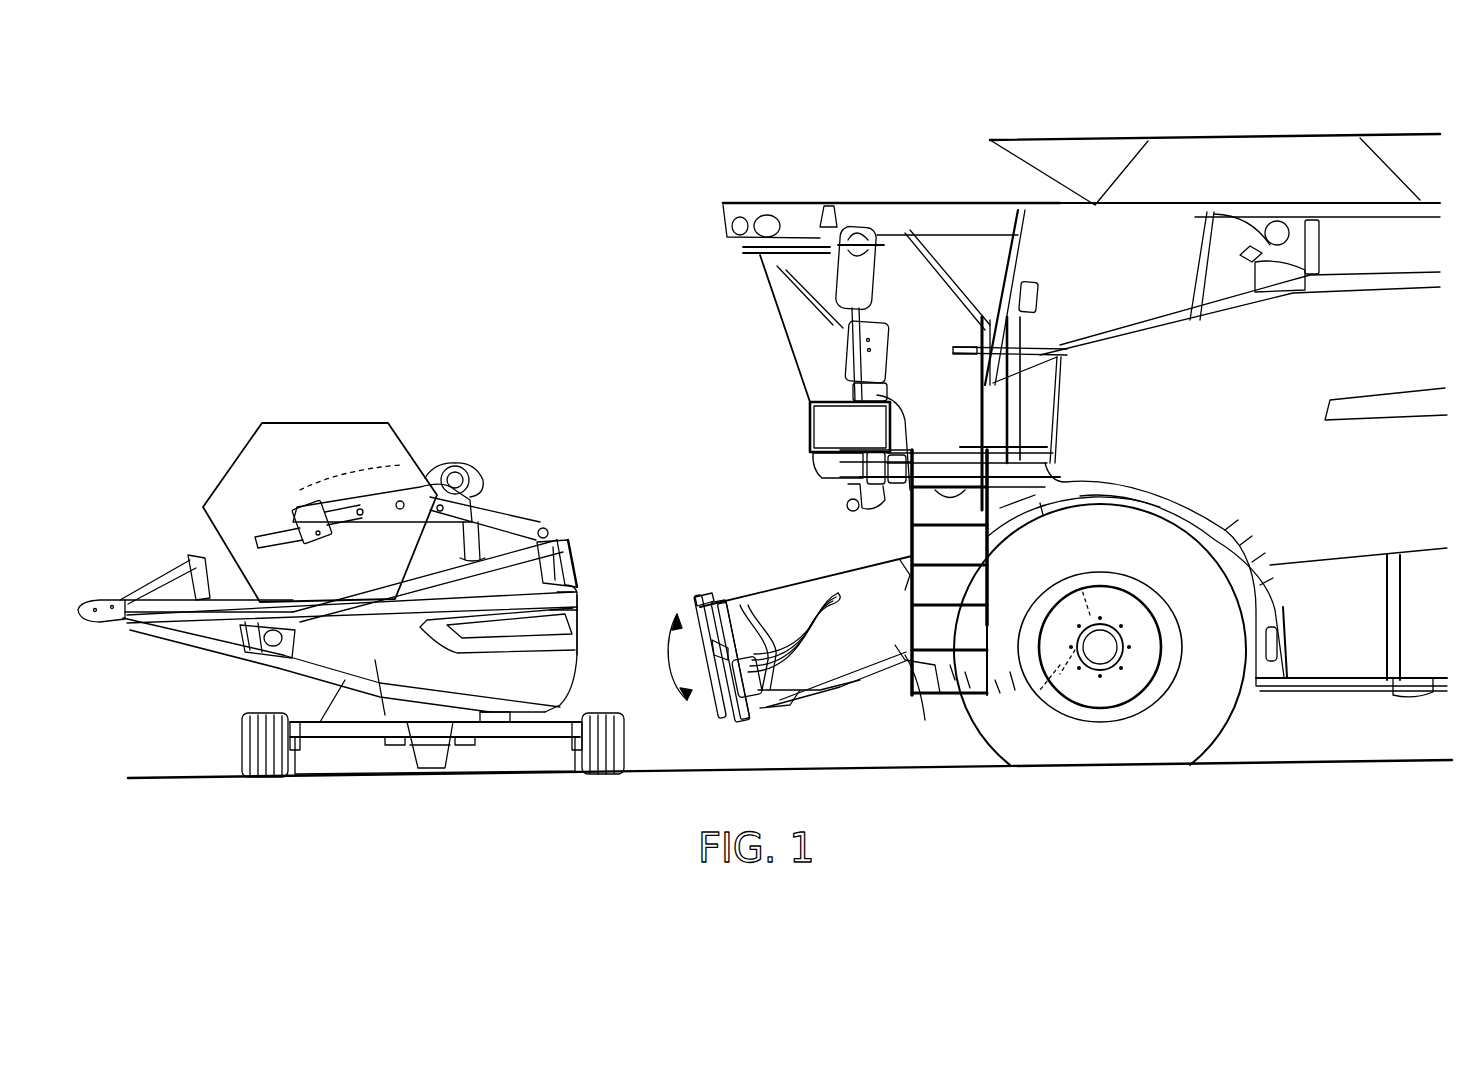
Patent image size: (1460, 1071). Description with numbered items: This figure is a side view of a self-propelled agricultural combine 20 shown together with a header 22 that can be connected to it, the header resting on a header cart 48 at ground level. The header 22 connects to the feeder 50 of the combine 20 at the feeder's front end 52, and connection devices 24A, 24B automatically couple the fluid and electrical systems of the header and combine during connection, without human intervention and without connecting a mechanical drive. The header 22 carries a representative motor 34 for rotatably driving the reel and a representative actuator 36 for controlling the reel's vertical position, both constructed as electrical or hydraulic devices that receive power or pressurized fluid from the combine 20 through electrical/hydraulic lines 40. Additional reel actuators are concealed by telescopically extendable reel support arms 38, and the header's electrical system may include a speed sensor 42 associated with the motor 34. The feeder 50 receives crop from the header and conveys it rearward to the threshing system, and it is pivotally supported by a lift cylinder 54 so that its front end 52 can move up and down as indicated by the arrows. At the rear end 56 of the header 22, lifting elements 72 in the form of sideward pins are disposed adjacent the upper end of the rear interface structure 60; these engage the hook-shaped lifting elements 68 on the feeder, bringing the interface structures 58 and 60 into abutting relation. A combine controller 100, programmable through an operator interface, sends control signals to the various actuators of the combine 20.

The self-propelled agricultural combine 20 is at (1335, 118).
The header 22 is at (508, 437).
The connection device 24A is at (575, 662).
The connection device 24B is at (758, 712).
The motor 34 is at (452, 468).
The actuator 36 is at (480, 548).
The telescopically extendable reel support arms 38 is at (316, 548).
The electrical/hydraulic lines 40 is at (786, 606).
The speed sensor 42 is at (378, 548).
The header cart 48 is at (342, 740).
The feeder 50 is at (770, 600).
The front end 52 is at (737, 600).
The lift cylinder 54 is at (928, 720).
The rear end 56 is at (596, 528).
The interface structure 58 is at (720, 702).
The rear interface structure 60 is at (578, 590).
The lifting elements 68 is at (706, 600).
The lifting elements 72 is at (580, 558).
The combine controller 100 is at (870, 439).